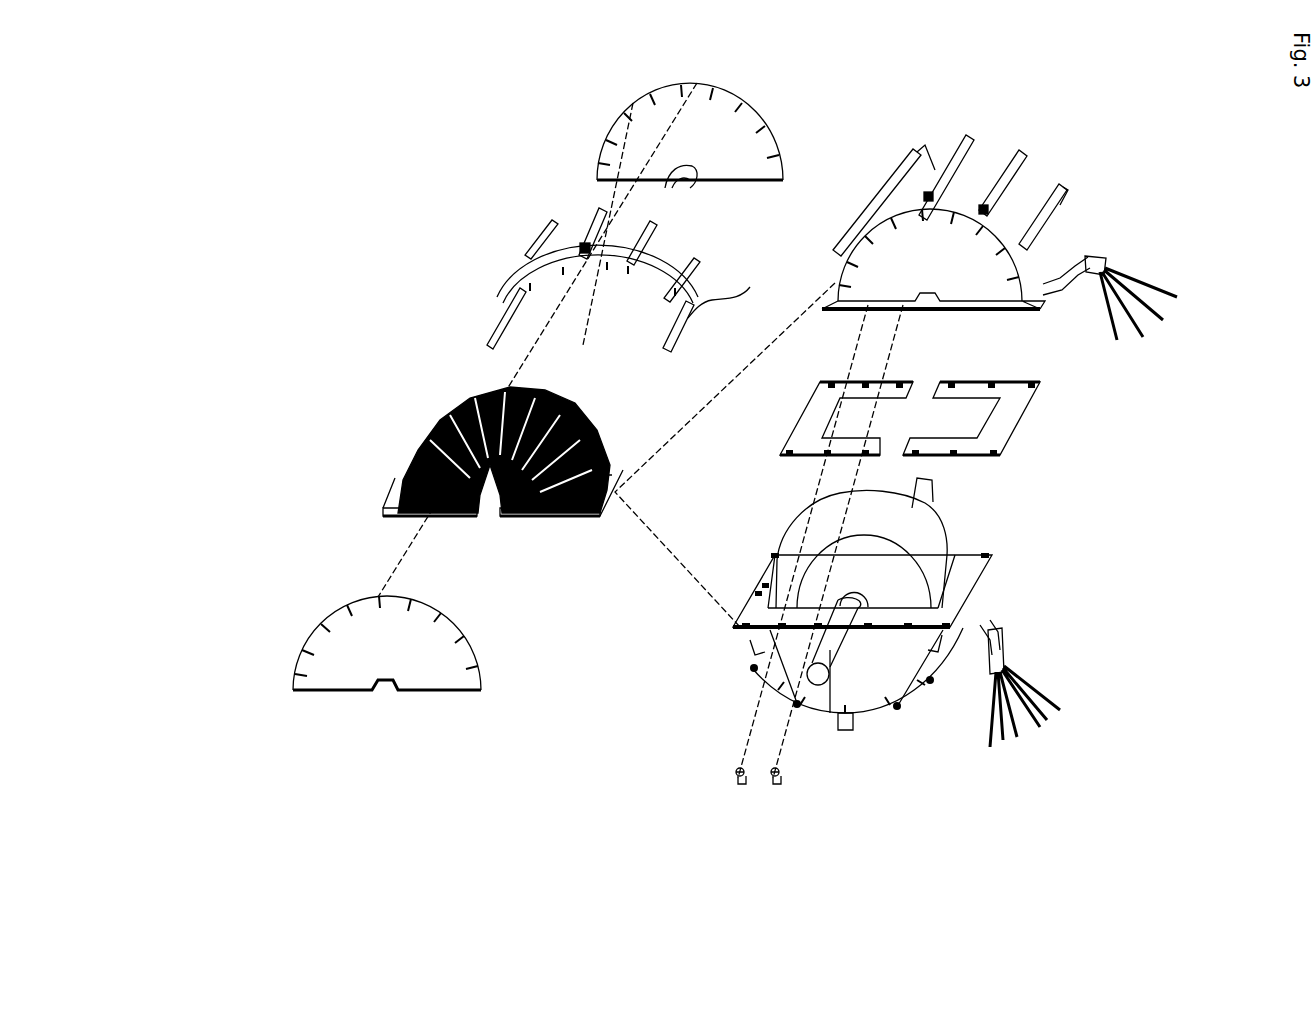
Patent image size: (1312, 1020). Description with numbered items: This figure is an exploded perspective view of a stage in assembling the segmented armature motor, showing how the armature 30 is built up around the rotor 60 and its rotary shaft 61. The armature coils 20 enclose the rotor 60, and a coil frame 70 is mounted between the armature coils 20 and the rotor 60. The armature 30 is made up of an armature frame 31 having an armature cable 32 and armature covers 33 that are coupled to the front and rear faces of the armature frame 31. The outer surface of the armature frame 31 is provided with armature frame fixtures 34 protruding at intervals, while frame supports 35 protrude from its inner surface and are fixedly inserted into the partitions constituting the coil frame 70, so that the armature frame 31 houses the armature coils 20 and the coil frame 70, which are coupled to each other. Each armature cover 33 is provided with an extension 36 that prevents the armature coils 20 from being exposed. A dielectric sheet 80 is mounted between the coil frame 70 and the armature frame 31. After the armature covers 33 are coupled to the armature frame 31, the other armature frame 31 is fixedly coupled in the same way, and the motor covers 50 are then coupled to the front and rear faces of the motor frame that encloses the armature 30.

The armature coils 20 is at (435, 418).
The armature 30 is at (1000, 157).
The armature frame 31 is at (510, 255).
The armature cable 32 is at (1093, 248).
The armature covers 33 is at (648, 127).
The armature frame fixtures 34 is at (492, 320).
The frame supports 35 is at (583, 345).
The extension 36 is at (668, 168).
The motor covers 50 is at (865, 668).
The rotor 60 is at (920, 533).
The rotary shaft 61 is at (830, 713).
The coil frame 70 is at (423, 466).
The dielectric sheet 80 is at (1040, 398).